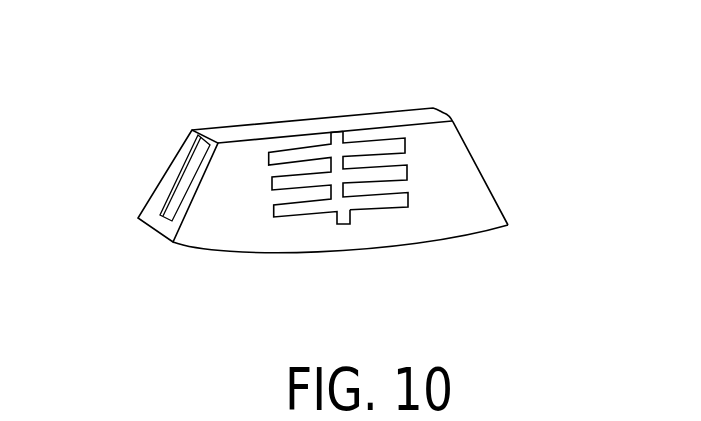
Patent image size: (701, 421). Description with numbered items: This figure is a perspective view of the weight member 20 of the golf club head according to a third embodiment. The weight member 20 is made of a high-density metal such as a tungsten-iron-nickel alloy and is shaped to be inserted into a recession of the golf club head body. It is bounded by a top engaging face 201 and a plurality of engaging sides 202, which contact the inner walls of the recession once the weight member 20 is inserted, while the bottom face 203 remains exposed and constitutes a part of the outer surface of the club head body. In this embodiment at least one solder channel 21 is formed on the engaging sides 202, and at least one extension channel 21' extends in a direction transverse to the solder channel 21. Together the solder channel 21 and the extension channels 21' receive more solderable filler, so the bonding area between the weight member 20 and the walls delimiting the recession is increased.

The weight member 20 is at (515, 180).
The top engaging face 201 is at (228, 133).
The engaging sides 202 is at (240, 233).
The bottom face 203 is at (147, 232).
The solder channel 21 is at (196, 123).
The extension channel 21' is at (457, 162).